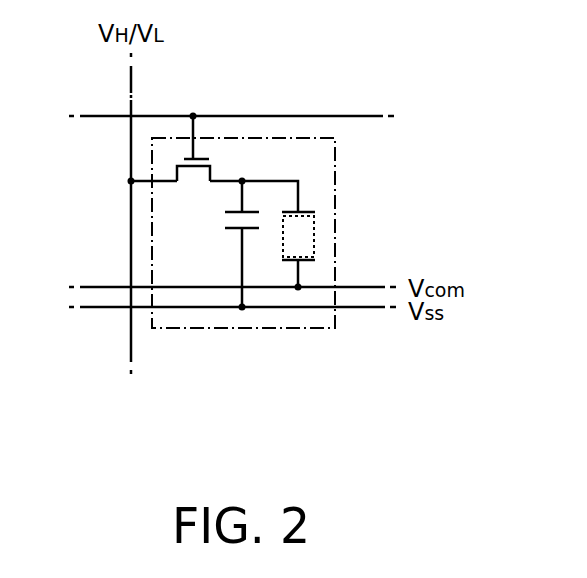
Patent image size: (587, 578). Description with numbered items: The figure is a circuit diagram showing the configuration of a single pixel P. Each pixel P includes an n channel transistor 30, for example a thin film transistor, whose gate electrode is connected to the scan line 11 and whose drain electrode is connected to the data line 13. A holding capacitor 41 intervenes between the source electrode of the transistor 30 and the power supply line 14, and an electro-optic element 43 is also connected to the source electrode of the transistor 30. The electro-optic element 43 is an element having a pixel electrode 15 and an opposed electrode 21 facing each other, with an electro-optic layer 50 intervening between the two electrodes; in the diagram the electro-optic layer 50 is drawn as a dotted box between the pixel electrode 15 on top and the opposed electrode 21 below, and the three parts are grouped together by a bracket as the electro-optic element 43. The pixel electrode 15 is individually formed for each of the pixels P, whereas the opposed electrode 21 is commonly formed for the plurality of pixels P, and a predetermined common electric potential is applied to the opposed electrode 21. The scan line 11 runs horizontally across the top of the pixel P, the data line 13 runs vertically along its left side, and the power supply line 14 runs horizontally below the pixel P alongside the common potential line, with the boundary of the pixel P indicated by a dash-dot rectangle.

The scan line 11 is at (322, 116).
The data line 13 is at (131, 242).
The power supply line 14 is at (362, 308).
The pixel electrode 15 is at (315, 211).
The opposed electrode 21 is at (344, 266).
The n channel transistor 30 is at (192, 175).
The holding capacitor 41 is at (229, 230).
The electro-optic element 43 is at (373, 236).
The electro-optic layer 50 is at (315, 237).
The pixel P is at (335, 158).